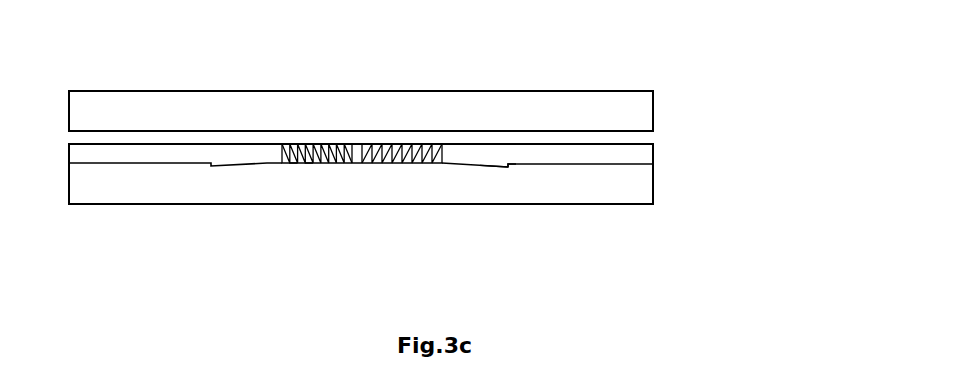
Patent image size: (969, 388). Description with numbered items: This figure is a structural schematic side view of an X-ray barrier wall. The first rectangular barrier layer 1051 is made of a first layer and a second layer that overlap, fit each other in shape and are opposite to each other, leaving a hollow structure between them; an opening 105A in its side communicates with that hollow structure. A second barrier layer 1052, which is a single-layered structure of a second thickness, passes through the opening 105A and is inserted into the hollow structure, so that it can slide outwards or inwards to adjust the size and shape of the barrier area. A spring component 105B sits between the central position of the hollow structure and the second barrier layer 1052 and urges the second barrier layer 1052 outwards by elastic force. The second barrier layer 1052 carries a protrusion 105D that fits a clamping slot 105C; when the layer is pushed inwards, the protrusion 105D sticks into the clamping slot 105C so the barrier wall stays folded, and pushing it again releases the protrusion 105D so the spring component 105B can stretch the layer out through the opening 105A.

The first rectangular barrier layer 1051 is at (500, 98).
The second barrier layer 1052 is at (647, 151).
The opening 105A is at (654, 137).
The spring component 105B is at (419, 158).
The clamping slot 105C is at (503, 168).
The protrusion 105D is at (493, 163).